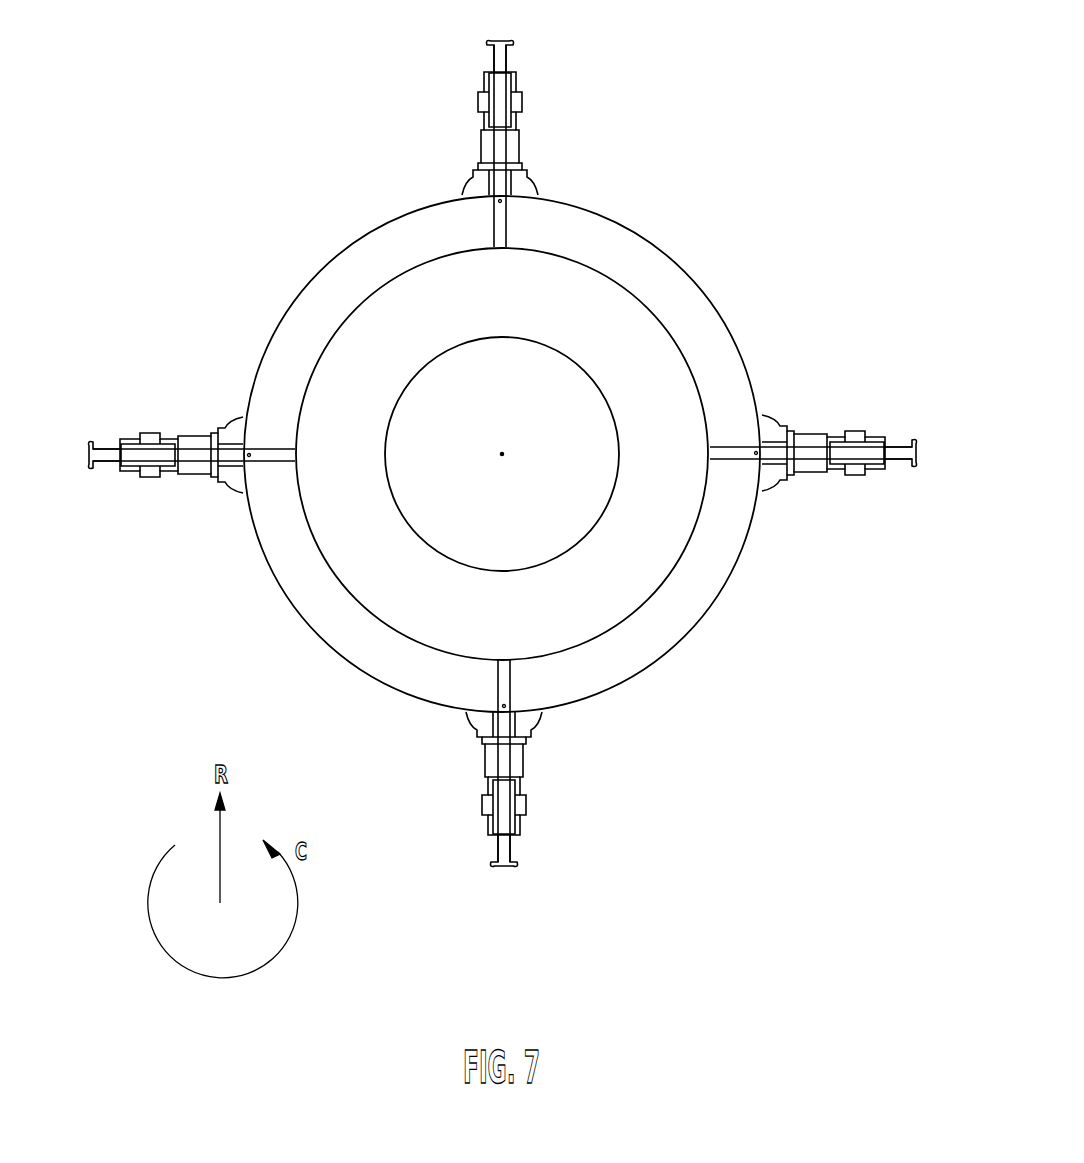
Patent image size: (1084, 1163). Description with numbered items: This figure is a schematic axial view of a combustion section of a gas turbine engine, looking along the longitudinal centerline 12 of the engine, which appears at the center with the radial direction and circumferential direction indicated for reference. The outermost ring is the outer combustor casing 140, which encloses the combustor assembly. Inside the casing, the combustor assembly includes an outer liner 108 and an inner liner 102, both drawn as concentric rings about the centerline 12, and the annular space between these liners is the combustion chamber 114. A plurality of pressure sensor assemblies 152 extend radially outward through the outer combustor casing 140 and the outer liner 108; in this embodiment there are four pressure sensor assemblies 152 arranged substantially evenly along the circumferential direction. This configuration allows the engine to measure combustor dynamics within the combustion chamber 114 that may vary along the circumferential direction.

The longitudinal centerline 12 is at (503, 453).
The inner liner 102 is at (580, 543).
The outer liner 108 is at (653, 317).
The combustion chamber 114 is at (377, 393).
The outer combustor casing 140 is at (620, 220).
The pressure sensor assemblies 152 is at (563, 100).